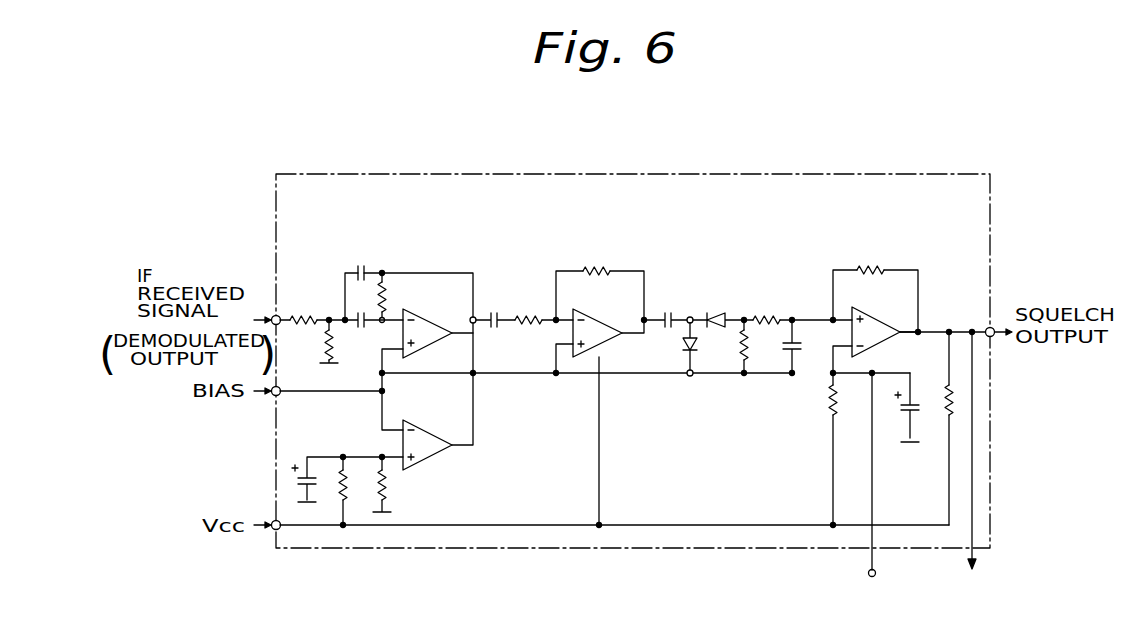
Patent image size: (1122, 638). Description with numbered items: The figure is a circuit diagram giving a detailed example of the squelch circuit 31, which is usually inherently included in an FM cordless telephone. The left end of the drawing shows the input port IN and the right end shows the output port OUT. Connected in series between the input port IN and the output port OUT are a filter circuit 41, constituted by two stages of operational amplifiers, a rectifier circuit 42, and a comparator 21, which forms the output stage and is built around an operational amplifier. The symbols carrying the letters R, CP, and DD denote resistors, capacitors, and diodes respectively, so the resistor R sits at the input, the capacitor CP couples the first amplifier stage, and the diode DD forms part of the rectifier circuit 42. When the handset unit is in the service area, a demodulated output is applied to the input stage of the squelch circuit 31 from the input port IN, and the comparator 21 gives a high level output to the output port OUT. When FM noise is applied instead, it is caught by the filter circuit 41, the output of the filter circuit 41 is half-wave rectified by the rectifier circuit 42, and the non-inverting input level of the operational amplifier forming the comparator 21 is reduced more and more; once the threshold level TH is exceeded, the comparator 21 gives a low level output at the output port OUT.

The squelch circuit 31 is at (577, 174).
The filter circuit 41 is at (335, 243).
The rectifier circuit 42 is at (800, 299).
The comparator 21 is at (930, 249).
The capacitor CP is at (365, 268).
The resistor R is at (307, 318).
The diode DD is at (682, 347).
The threshold level TH is at (824, 375).
The input port IN is at (277, 318).
The output port OUT is at (993, 337).